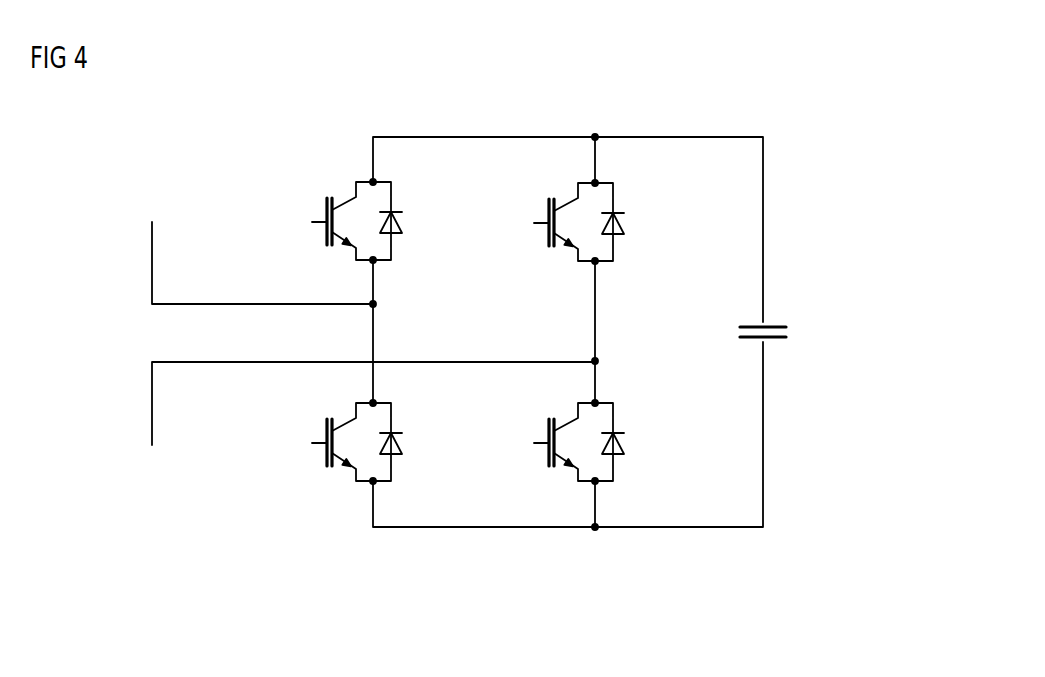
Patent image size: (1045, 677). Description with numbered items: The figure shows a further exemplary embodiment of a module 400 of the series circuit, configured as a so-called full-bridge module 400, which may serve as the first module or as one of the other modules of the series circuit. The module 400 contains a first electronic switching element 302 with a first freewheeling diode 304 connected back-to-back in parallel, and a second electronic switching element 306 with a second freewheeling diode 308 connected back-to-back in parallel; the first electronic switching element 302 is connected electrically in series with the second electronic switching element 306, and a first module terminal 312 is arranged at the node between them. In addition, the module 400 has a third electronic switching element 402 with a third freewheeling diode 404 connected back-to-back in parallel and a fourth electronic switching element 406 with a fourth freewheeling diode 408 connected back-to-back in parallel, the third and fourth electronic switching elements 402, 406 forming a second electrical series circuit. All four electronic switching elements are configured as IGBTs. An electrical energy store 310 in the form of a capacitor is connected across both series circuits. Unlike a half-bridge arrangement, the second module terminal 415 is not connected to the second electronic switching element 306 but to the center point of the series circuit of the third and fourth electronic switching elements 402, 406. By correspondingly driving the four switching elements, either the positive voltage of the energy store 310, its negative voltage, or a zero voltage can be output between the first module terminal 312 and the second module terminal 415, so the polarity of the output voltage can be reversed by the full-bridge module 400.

The module 400 is at (760, 109).
The first electronic switching element 302 is at (326, 210).
The first freewheeling diode 304 is at (402, 228).
The second electronic switching element 306 is at (326, 431).
The second freewheeling diode 308 is at (402, 450).
The energy store 310 is at (738, 330).
The first module terminal 312 is at (151, 260).
The third electronic switching element 402 is at (548, 213).
The third freewheeling diode 404 is at (624, 228).
The fourth electronic switching element 406 is at (548, 433).
The fourth freewheeling diode 408 is at (624, 450).
The second module terminal 415 is at (151, 408).